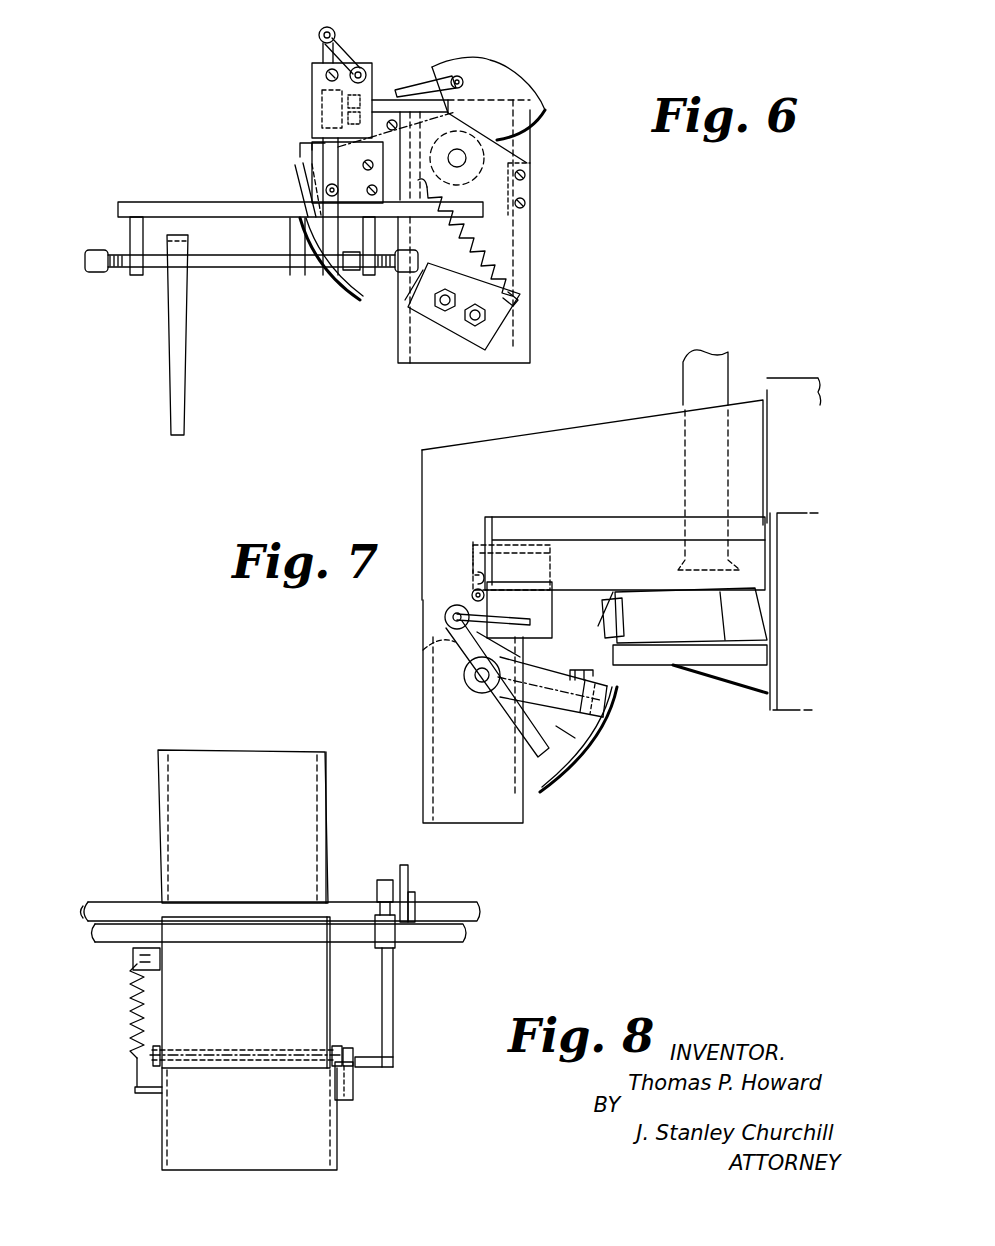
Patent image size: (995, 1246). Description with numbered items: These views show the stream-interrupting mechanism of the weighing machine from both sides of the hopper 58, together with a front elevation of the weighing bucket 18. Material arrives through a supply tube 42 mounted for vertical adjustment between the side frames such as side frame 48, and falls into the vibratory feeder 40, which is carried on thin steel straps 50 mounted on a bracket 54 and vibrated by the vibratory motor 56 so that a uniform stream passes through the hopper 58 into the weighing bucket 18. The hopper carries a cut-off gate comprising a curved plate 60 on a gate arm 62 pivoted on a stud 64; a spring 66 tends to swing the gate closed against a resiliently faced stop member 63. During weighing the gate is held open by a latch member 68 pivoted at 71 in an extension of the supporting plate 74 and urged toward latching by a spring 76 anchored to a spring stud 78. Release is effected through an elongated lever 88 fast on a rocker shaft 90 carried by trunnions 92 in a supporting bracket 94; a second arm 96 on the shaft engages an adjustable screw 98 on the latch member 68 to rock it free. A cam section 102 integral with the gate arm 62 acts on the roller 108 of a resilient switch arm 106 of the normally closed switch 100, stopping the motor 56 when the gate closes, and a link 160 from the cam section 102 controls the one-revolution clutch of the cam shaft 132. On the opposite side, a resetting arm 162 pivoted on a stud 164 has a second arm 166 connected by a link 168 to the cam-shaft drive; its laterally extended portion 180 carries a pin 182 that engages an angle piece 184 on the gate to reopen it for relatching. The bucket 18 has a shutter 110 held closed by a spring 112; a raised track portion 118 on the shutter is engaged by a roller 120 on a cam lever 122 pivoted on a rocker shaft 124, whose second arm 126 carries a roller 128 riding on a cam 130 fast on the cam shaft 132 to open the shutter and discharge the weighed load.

In FIG. 8, the weighing bucket 18 is at (246, 992).
In FIG. 7, the vibratory feeder 40 is at (625, 553).
In FIG. 7, the supply tube 42 is at (683, 385).
In FIG. 7, the side frame 48 is at (530, 437).
In FIG. 7, the thin steel straps 50 is at (712, 617).
In FIG. 7, the bracket 54 is at (648, 660).
In FIG. 7, the vibratory motor 56 is at (633, 614).
In FIG. 6, the hopper 58 is at (542, 222).
In FIG. 7, the hopper 58 is at (412, 708).
In FIG. 8, the hopper 58 is at (243, 826).
In FIG. 6, the stream-interrupting gate 60 is at (352, 292).
In FIG. 7, the stream-interrupting gate 60 is at (602, 742).
In FIG. 6, the gate arm 62 is at (300, 172).
In FIG. 7, the gate arm 62 is at (603, 710).
In FIG. 6, the stop member 63 is at (423, 308).
In FIG. 6, the stud 64 is at (460, 160).
In FIG. 6, the spring 66 is at (472, 240).
In FIG. 6, the latch member 68 is at (327, 145).
In FIG. 6, the pivot 71 is at (316, 105).
In FIG. 6, the supporting plate 74 is at (373, 64).
In FIG. 6, the spring 76 is at (318, 35).
In FIG. 6, the spring stud 78 is at (347, 58).
In FIG. 6, the elongated lever 88 is at (180, 372).
In FIG. 6, the rocker shaft 90 is at (236, 265).
In FIG. 6, the trunnions 92 is at (112, 250).
In FIG. 6, the supporting bracket 94 is at (167, 202).
In FIG. 6, the second arm 96 is at (323, 233).
In FIG. 6, the adjustable screw 98 is at (322, 188).
In FIG. 7, the switch 100 is at (560, 552).
In FIG. 6, the cam section 102 is at (532, 86).
In FIG. 7, the switch arm 106 is at (481, 570).
In FIG. 7, the roller 108 is at (470, 592).
In FIG. 8, the shutter 110 is at (338, 1140).
In FIG. 8, the spring 112 is at (131, 1006).
In FIG. 8, the raised track portion 118 is at (355, 1085).
In FIG. 8, the roller 120 is at (349, 1048).
In FIG. 8, the cam lever 122 is at (394, 1004).
In FIG. 8, the rocker shaft 124 is at (445, 932).
In FIG. 8, the second arm 126 is at (384, 880).
In FIG. 8, the roller 128 is at (416, 893).
In FIG. 8, the cam 130 is at (409, 868).
In FIG. 8, the cam shaft 132 is at (474, 905).
In FIG. 6, the link 160 is at (430, 86).
In FIG. 7, the resetting arm 162 is at (510, 722).
In FIG. 7, the stud 164 is at (478, 682).
In FIG. 7, the second arm 166 is at (447, 612).
In FIG. 7, the link 168 is at (519, 610).
In FIG. 7, the laterally extended portion 180 is at (520, 740).
In FIG. 7, the pin 182 is at (575, 735).
In FIG. 6, the angle piece 184 is at (300, 147).
In FIG. 7, the angle piece 184 is at (592, 672).